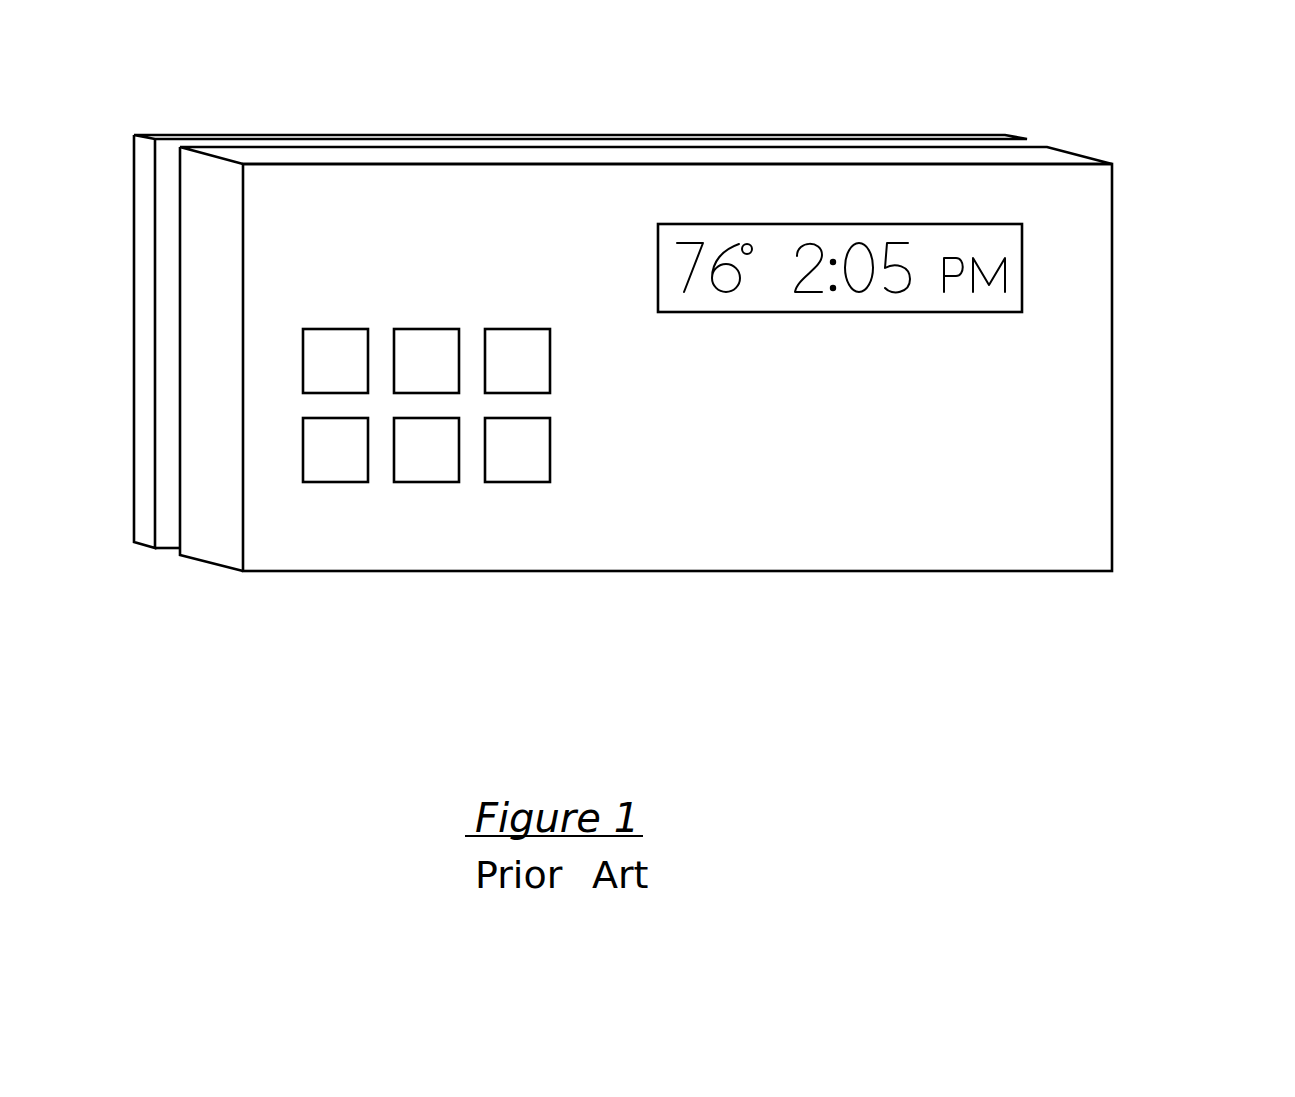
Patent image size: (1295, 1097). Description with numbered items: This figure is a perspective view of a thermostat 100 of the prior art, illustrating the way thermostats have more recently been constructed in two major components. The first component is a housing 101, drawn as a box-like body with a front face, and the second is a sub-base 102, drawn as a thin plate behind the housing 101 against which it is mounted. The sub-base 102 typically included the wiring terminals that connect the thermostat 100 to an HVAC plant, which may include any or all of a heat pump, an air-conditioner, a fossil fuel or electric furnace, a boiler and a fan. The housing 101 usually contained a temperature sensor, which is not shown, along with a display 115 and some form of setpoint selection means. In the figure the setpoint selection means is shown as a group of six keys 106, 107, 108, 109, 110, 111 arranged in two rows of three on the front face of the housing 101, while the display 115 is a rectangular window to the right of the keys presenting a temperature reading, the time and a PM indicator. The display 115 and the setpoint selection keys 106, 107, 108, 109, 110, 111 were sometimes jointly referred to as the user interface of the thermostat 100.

The thermostat 100 is at (695, 305).
The housing 101 is at (1073, 150).
The sub-base 102 is at (172, 135).
The key 106 is at (327, 338).
The key 107 is at (417, 338).
The key 108 is at (513, 338).
The key 109 is at (325, 476).
The key 110 is at (415, 476).
The key 111 is at (507, 476).
The display 115 is at (933, 313).